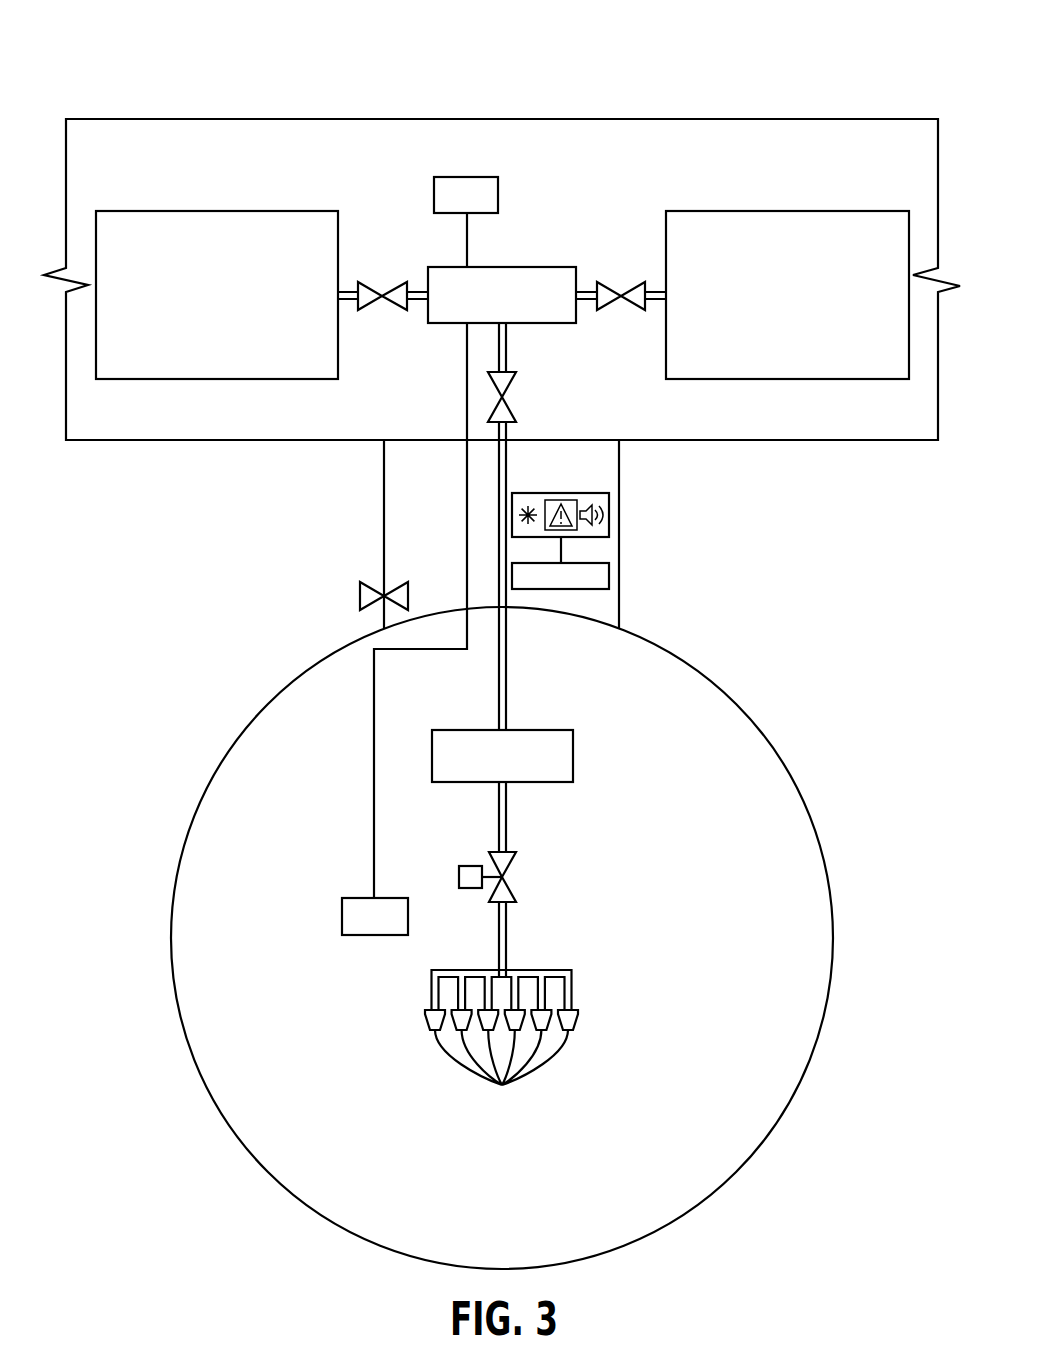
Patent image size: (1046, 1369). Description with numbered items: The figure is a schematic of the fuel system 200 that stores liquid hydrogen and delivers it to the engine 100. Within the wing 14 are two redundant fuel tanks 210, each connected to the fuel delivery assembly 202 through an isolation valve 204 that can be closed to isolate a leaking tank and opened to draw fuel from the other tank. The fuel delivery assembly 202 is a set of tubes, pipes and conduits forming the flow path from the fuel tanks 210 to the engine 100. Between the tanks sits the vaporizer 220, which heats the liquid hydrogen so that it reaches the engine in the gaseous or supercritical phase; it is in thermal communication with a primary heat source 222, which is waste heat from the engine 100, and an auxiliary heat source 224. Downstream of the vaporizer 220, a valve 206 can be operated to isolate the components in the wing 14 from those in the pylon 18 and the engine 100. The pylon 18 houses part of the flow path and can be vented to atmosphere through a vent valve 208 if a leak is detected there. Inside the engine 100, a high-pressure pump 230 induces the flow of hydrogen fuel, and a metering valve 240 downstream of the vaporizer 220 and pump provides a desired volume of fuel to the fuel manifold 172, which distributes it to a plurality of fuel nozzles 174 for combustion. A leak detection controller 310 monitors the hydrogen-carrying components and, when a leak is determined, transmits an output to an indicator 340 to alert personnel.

The fuel system 200 is at (214, 30).
The wing 14 is at (148, 412).
The fuel tank 210 is at (150, 210).
The fuel delivery assembly 202 is at (418, 290).
The isolation valve 204 is at (368, 303).
The vaporizer 220 is at (512, 267).
The auxiliary heat source 224 is at (465, 177).
The valve 206 is at (502, 412).
The pylon 18 is at (403, 570).
The vent valve 208 is at (358, 597).
The engine 100 is at (285, 730).
The indicator 340 is at (610, 512).
The leak detection controller 310 is at (610, 575).
The high-pressure pump 230 is at (523, 730).
The metering valve 240 is at (503, 862).
The primary heat source 222 is at (342, 914).
The fuel manifold 172 is at (432, 990).
The fuel nozzles 174 is at (501, 1077).